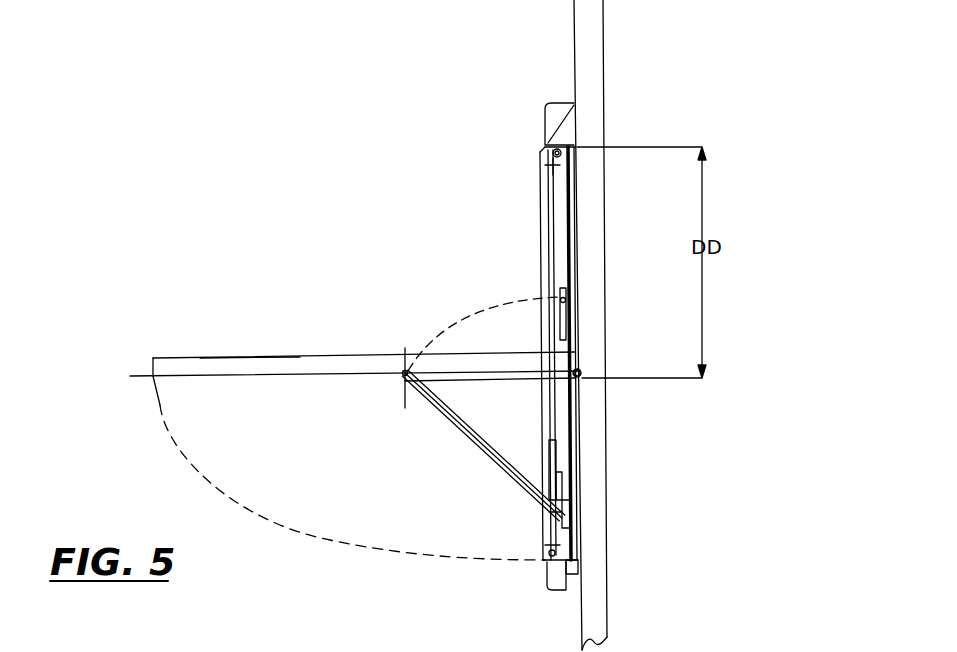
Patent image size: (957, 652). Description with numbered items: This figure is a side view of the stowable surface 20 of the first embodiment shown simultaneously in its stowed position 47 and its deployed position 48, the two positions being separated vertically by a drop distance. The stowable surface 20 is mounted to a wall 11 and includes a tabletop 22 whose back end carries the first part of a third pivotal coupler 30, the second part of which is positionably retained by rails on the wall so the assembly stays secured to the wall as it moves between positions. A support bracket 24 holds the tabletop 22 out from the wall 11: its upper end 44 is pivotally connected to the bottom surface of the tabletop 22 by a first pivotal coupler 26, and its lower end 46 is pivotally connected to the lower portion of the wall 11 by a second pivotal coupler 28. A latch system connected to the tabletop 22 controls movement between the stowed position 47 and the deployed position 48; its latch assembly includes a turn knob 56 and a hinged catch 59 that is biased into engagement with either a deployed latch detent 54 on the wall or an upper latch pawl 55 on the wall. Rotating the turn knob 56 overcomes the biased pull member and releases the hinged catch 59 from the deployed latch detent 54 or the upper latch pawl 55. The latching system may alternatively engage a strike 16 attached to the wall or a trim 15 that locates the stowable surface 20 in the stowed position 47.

The wall 11 is at (593, 44).
The trim 15 is at (558, 118).
The strike 16 is at (559, 582).
The stowable surface 20 is at (110, 410).
The tabletop 22 is at (274, 367).
The support bracket 24 is at (485, 447).
The first pivotal coupler 26 is at (405, 373).
The second pivotal coupler 28 is at (575, 536).
The third pivotal coupler 30 is at (578, 370).
The upper end 44 is at (423, 395).
The lower end 46 is at (568, 524).
The stowed position 47 is at (503, 222).
The deployed position 48 is at (241, 343).
The deployed latch detent 54 is at (579, 376).
The upper latch pawl 55 is at (572, 146).
The turn knob 56 is at (545, 557).
The hinged catch 59 is at (577, 372).